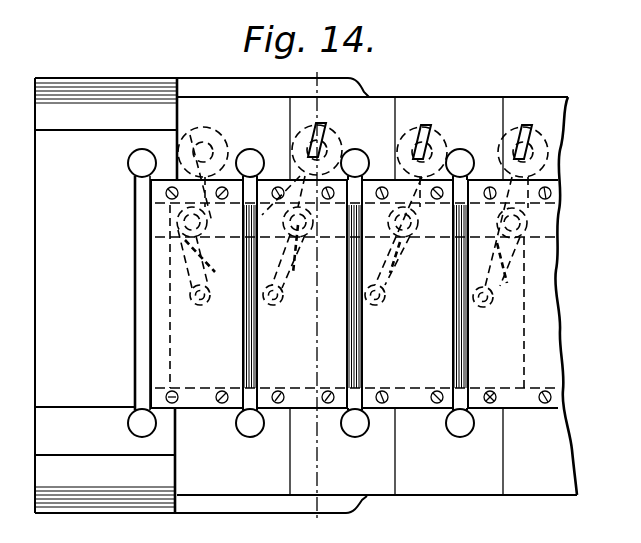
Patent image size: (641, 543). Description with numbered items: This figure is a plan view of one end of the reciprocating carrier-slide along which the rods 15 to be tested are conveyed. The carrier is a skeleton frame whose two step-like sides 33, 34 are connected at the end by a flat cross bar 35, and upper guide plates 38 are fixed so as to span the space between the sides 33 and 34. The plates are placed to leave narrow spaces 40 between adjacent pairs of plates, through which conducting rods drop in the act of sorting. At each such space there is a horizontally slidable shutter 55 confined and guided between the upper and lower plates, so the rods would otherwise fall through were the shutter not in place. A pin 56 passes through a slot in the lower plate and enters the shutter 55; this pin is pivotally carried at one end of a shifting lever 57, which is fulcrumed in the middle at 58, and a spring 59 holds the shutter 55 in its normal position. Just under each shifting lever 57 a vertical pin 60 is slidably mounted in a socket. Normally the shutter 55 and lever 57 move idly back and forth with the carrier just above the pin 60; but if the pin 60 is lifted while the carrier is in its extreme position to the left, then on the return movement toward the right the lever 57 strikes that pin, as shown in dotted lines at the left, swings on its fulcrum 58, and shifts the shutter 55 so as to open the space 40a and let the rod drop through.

The rods 15 is at (303, 294).
The side of carrier frame 33 is at (468, 112).
The side of carrier frame 34 is at (487, 487).
The cross bar 35 is at (69, 295).
The upper guide plates 38 is at (354, 361).
The spaces 40 is at (247, 436).
The space 40a is at (143, 331).
The shutter 55 is at (357, 330).
The pin 56 is at (212, 307).
The shifting lever 57 is at (575, 283).
The fulcrum 58 is at (208, 222).
The spring 59 is at (401, 306).
The vertical pin 60 is at (293, 134).